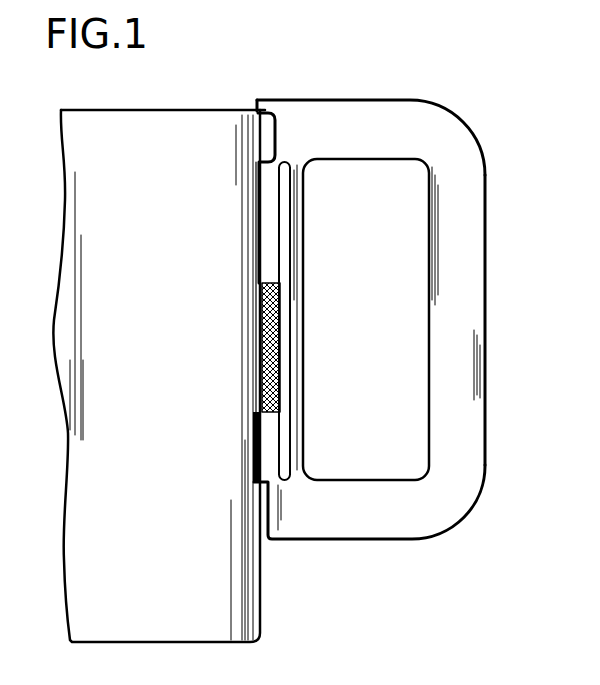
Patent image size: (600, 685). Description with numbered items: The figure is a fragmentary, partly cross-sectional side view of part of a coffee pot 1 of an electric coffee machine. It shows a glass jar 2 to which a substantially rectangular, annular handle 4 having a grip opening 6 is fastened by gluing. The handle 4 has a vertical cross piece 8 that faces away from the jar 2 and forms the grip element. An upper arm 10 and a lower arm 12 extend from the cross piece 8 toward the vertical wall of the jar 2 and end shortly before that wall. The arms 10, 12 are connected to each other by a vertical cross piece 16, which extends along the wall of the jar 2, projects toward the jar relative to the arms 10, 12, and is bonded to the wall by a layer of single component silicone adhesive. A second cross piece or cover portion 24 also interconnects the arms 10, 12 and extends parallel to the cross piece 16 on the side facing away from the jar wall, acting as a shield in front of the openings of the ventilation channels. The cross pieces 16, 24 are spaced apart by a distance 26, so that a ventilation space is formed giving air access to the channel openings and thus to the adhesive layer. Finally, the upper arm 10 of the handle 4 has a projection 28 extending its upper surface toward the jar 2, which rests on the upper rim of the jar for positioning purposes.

The coffee pot 1 is at (293, 338).
The glass jar 2 is at (150, 128).
The handle 4 is at (381, 330).
The grip opening 6 is at (413, 252).
The vertical cross piece 8 is at (465, 343).
The upper arm 10 is at (357, 110).
The lower arm 12 is at (348, 528).
The vertical cross piece 16 is at (272, 222).
The second cross piece 24 is at (297, 300).
The distance 26 is at (285, 350).
The projection 28 is at (262, 100).